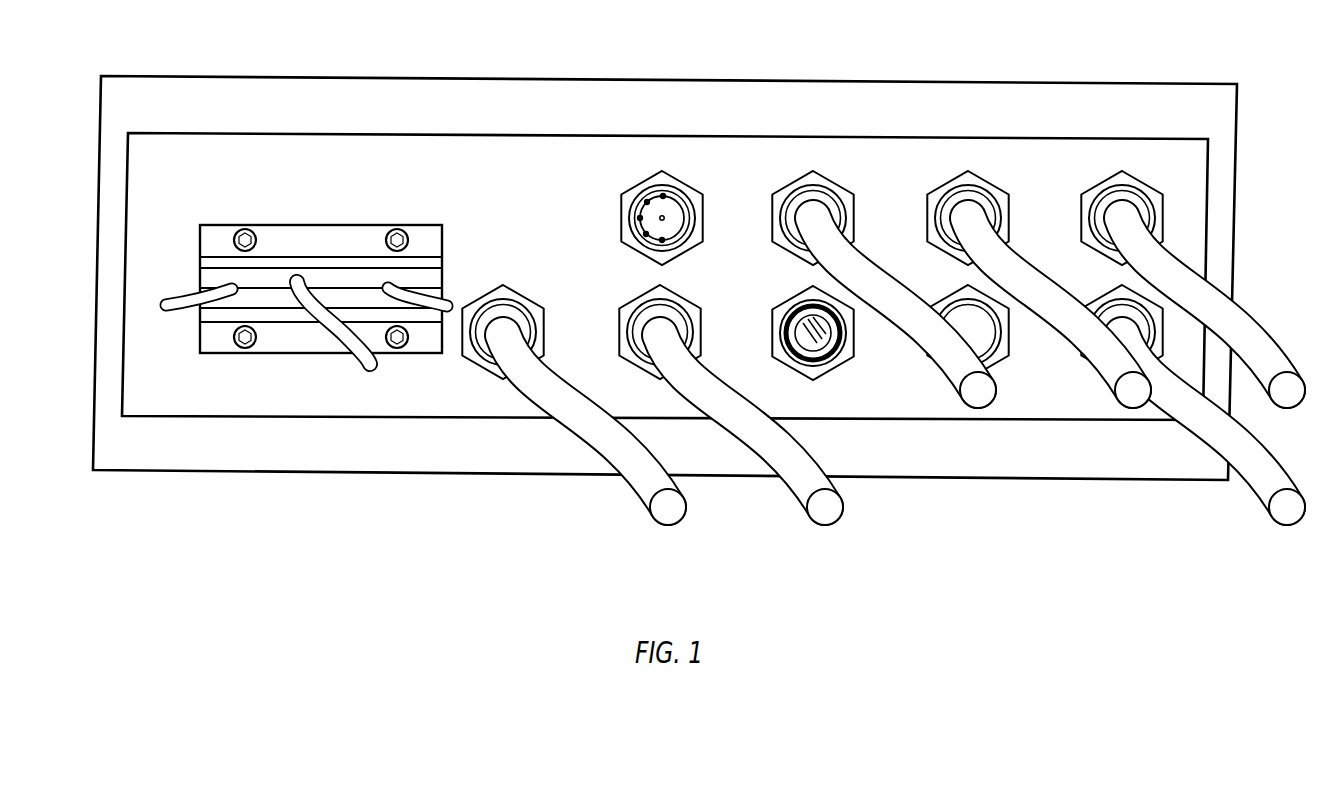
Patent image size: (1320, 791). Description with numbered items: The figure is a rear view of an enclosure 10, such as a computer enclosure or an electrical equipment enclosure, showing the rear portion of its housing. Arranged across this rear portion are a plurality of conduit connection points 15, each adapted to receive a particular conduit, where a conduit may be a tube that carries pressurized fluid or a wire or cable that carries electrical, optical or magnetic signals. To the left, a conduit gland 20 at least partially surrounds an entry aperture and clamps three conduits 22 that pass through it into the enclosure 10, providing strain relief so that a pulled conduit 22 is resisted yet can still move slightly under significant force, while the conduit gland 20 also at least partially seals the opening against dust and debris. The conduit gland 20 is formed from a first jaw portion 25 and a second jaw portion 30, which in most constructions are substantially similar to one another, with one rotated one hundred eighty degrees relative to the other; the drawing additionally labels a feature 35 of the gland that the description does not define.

The enclosure 10 is at (562, 107).
The conduit connection points 15 is at (808, 180).
The conduit gland 20 is at (330, 323).
The conduit 22 is at (176, 294).
The first jaw portion 25 is at (202, 343).
The second jaw portion 30 is at (363, 233).
The mounting screws 35 is at (335, 243).